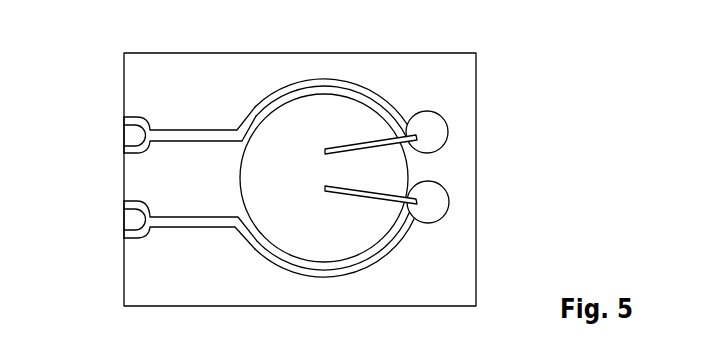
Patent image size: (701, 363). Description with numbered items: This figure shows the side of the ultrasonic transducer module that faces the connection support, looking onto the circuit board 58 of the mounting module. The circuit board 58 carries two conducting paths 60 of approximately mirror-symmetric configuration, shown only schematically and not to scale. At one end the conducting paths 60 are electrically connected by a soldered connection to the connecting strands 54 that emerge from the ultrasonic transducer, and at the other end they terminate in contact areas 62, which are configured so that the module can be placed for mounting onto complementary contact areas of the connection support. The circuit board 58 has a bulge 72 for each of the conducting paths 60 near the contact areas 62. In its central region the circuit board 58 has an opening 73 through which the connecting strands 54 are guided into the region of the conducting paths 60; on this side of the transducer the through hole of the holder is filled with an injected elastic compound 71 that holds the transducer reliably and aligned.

The connecting strands 54 is at (330, 153).
The circuit board 58 is at (465, 173).
The conducting paths 60 is at (228, 135).
The contact areas 62 is at (117, 119).
The elastic compound 71 is at (325, 117).
The bulge 72 is at (116, 137).
The opening 73 is at (268, 252).